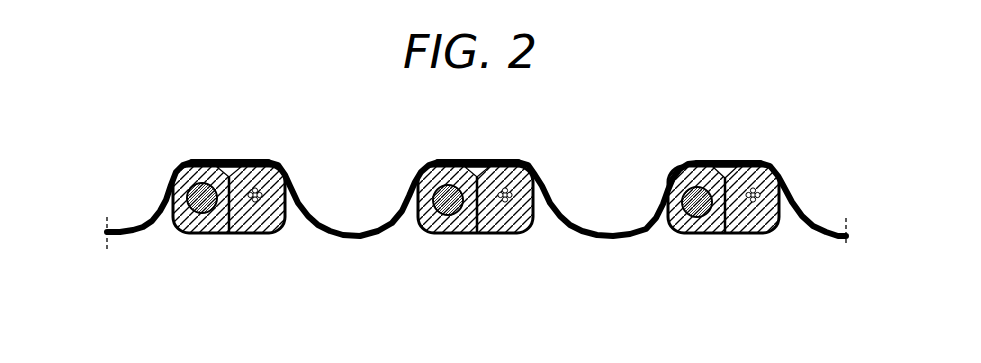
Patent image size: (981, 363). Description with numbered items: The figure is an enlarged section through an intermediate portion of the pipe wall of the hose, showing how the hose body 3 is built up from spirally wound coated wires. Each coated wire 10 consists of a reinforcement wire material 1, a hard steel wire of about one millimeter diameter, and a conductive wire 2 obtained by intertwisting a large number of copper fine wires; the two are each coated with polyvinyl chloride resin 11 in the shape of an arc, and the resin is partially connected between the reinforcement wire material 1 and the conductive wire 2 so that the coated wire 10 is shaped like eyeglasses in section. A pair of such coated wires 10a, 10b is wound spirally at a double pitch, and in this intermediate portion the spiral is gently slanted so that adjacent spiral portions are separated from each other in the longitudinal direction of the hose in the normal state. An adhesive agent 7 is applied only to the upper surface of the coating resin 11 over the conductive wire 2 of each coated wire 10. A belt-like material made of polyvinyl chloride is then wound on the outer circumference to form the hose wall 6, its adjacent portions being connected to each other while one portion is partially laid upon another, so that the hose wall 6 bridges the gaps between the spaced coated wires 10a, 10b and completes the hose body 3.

The reinforcement wire material 1 is at (677, 228).
The conductive wire 2 is at (781, 226).
The hose body 3 is at (476, 168).
The hose wall 6 is at (530, 177).
The adhesive agent 7 is at (510, 167).
The coated wire 10 is at (723, 243).
The coated wire 10a is at (227, 256).
The coated wire 10b is at (480, 256).
The polyvinyl chloride resin 11 is at (710, 225).